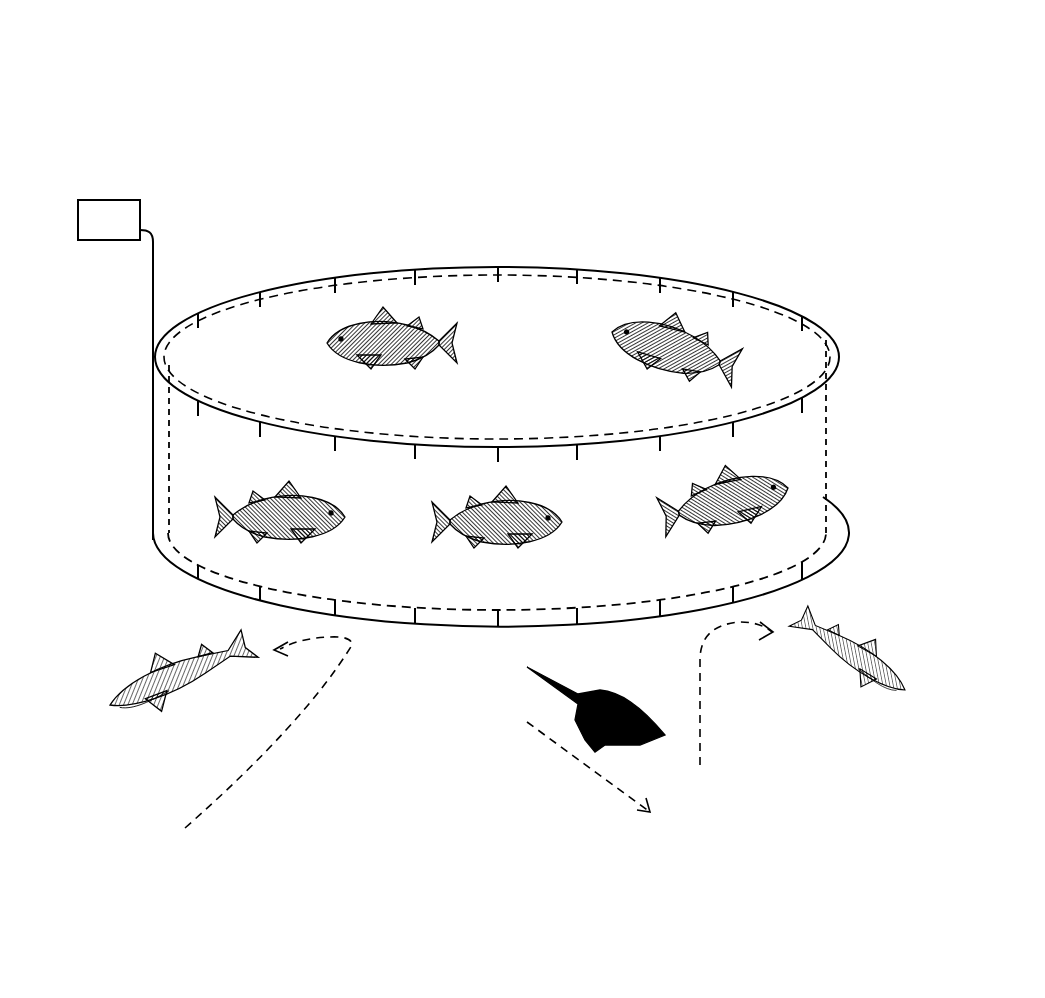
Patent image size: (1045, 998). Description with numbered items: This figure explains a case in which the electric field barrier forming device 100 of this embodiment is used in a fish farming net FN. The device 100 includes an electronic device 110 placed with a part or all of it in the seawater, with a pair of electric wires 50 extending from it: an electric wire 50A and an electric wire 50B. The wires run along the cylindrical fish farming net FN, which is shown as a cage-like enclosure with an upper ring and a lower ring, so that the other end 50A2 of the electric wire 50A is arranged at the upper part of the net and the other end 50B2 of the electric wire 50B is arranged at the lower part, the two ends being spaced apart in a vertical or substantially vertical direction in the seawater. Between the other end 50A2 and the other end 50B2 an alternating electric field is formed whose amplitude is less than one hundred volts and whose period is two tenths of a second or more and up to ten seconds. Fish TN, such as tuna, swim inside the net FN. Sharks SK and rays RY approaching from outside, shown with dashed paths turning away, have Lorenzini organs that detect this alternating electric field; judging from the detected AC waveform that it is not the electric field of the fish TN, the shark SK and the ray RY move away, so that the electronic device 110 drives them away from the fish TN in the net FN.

The aquaculture system 100 is at (152, 82).
The control device 110 is at (118, 200).
The fish cage 50 is at (153, 258).
The electric wire 50A is at (826, 332).
The electric wire 50B is at (835, 560).
The other end of the electric wire 50A2 is at (433, 272).
The other end of the electric wire 50B2 is at (333, 612).
The fish farming net FN is at (832, 442).
The fish TN is at (432, 340).
The shark SK is at (140, 682).
The ray RY is at (575, 698).